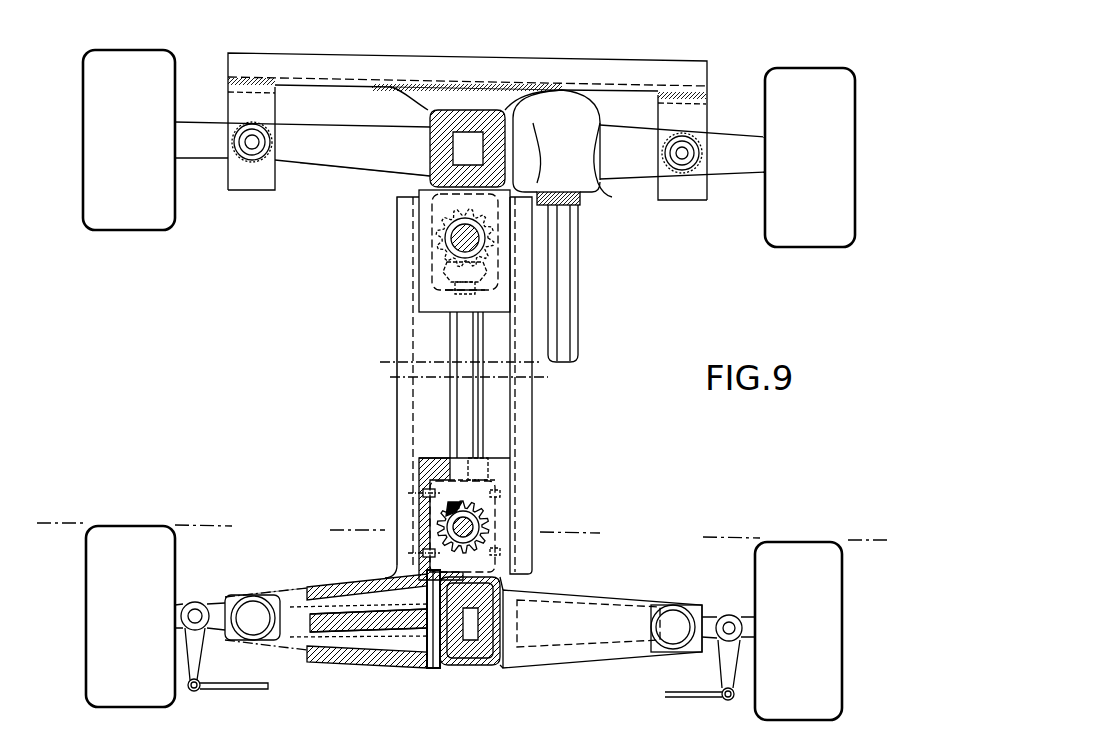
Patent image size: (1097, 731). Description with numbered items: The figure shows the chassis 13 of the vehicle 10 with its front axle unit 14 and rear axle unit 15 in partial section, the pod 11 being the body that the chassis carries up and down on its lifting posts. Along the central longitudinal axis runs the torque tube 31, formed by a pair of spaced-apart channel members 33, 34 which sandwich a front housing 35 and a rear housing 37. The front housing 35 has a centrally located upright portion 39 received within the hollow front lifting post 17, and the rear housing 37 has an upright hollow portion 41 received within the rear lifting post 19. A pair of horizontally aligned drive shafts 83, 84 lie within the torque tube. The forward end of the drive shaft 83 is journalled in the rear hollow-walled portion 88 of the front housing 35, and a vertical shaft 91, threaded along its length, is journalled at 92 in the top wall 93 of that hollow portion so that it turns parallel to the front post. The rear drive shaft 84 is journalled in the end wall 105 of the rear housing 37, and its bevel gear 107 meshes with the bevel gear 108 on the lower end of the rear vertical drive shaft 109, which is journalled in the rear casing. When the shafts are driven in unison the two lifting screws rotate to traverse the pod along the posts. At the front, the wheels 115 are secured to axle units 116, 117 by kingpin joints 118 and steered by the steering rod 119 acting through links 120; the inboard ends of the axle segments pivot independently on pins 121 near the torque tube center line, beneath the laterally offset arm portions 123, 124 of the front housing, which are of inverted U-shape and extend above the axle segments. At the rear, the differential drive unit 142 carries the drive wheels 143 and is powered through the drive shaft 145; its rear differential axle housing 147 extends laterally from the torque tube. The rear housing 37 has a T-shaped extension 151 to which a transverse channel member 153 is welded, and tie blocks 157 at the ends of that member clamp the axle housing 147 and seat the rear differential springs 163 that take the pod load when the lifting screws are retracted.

The vehicle 10 is at (685, 12).
The pod 11 is at (61, 522).
The chassis 13 is at (728, 480).
The front axle unit 14 is at (257, 572).
The rear axle unit 15 is at (305, 172).
The front lifting post 17 is at (508, 594).
The rear lifting post 19 is at (402, 98).
The torque tube 31 is at (392, 418).
The channel member 33 is at (398, 466).
The channel member 34 is at (522, 448).
The front housing 35 is at (350, 572).
The rear housing 37 is at (513, 92).
The upright portion 39 is at (495, 668).
The upright hollow portion 41 is at (450, 178).
The drive shaft 83 is at (478, 418).
The drive shaft 84 is at (446, 366).
The rear hollow-walled portion 88 is at (430, 500).
The vertical shaft 91 is at (497, 524).
The journal 92 is at (432, 521).
The top wall 93 is at (498, 471).
The end wall 105 is at (425, 314).
The bevel gear 107 is at (448, 272).
The bevel gear 108 is at (437, 238).
The rear vertical drive shaft 109 is at (450, 250).
The wheels 115 is at (86, 660).
The axle unit 116 is at (370, 636).
The axle unit 117 is at (608, 650).
The kingpin joints 118 is at (196, 602).
The steering rod 119 is at (252, 690).
The links 120 is at (200, 668).
The pins 121 is at (433, 670).
The arm portion 123 is at (320, 586).
The arm portion 124 is at (640, 592).
The differential drive unit 142 is at (592, 190).
The drive wheels 143 is at (148, 232).
The drive shaft 145 is at (580, 308).
The rear differential axle housing 147 is at (352, 176).
The T-shaped extension 151 is at (445, 104).
The transverse channel member 153 is at (600, 62).
The tie blocks 157 is at (238, 194).
The spring 163 is at (262, 130).